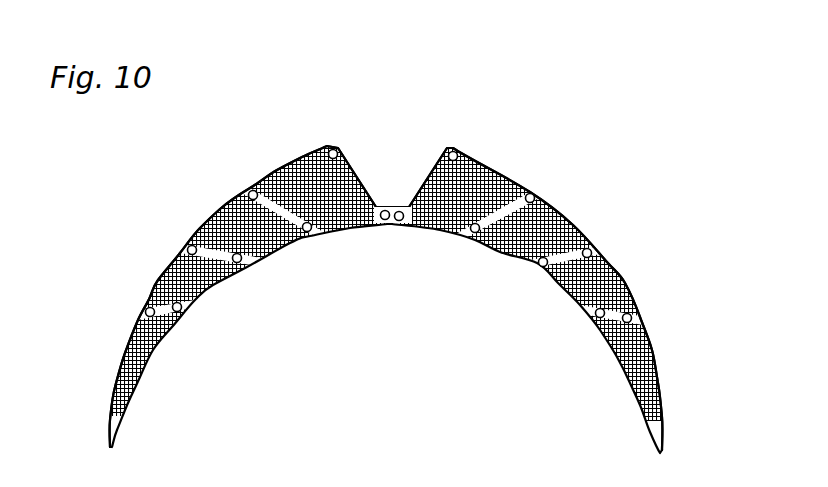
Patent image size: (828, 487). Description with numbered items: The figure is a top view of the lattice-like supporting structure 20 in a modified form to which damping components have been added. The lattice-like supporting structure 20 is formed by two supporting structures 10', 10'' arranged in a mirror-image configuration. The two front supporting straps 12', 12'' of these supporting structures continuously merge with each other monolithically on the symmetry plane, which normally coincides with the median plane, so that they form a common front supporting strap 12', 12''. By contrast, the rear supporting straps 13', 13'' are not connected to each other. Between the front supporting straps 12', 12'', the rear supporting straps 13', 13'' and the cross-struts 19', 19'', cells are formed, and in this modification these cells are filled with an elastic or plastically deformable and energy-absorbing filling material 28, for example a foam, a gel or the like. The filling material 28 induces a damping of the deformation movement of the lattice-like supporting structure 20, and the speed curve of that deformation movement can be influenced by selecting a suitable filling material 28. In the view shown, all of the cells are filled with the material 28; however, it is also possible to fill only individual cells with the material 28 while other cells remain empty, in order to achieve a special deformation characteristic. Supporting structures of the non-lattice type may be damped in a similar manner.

The lattice-like supporting structure 20 is at (405, 130).
The supporting structure 10' is at (243, 277).
The supporting structure 10'' is at (557, 299).
The front supporting strap 12' is at (159, 366).
The front supporting strap 12'' is at (565, 329).
The rear supporting strap 13' is at (242, 207).
The rear supporting strap 13'' is at (476, 162).
The cross-struts 19' is at (268, 197).
The cross-struts 19'' is at (513, 191).
The filling material 28 is at (133, 350).